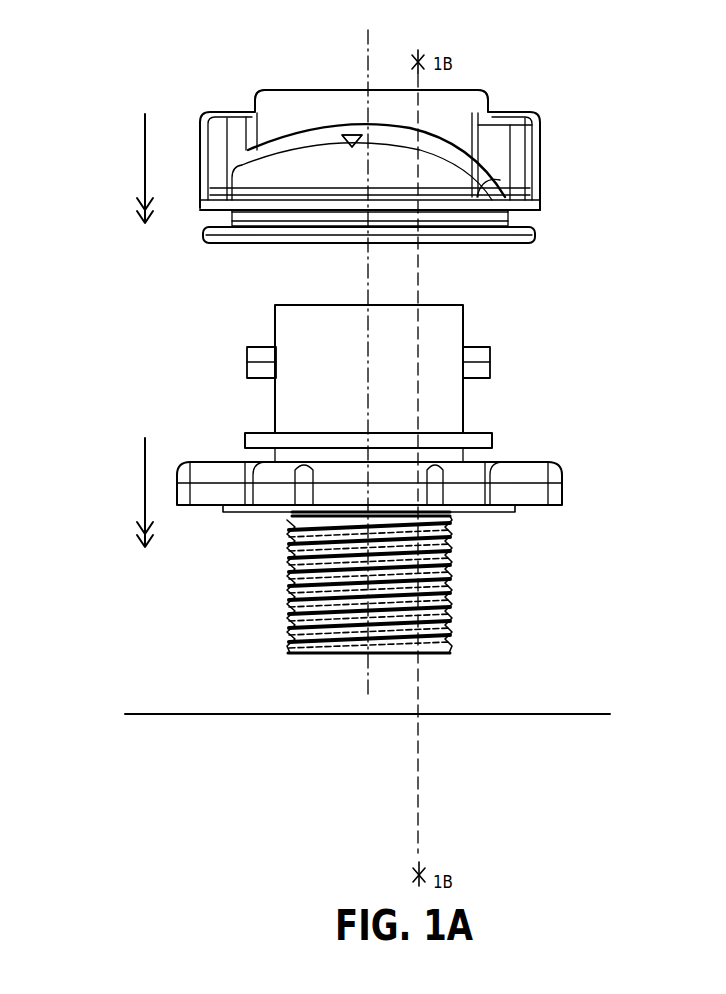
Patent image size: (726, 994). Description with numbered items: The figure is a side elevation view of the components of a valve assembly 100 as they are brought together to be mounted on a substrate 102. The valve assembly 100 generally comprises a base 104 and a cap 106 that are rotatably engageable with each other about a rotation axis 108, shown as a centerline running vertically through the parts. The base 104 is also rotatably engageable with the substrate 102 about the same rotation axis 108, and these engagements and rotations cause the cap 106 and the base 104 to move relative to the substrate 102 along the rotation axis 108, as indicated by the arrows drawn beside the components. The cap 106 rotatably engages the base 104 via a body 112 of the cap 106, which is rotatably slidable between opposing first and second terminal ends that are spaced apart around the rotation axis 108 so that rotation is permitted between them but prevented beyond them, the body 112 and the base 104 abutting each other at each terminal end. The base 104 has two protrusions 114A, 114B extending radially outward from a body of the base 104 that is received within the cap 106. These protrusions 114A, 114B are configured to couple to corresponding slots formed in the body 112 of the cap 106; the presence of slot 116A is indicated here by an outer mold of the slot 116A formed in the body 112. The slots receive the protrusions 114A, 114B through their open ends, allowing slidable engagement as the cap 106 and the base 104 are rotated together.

The valve assembly 100 is at (620, 108).
The substrate 102 is at (190, 714).
The base 104 is at (525, 417).
The cap 106 is at (557, 188).
The rotation axis 108 is at (368, 683).
The body 112 is at (283, 118).
The first protrusion 114A is at (250, 347).
The second protrusion 114B is at (490, 347).
The slot 116A is at (450, 177).